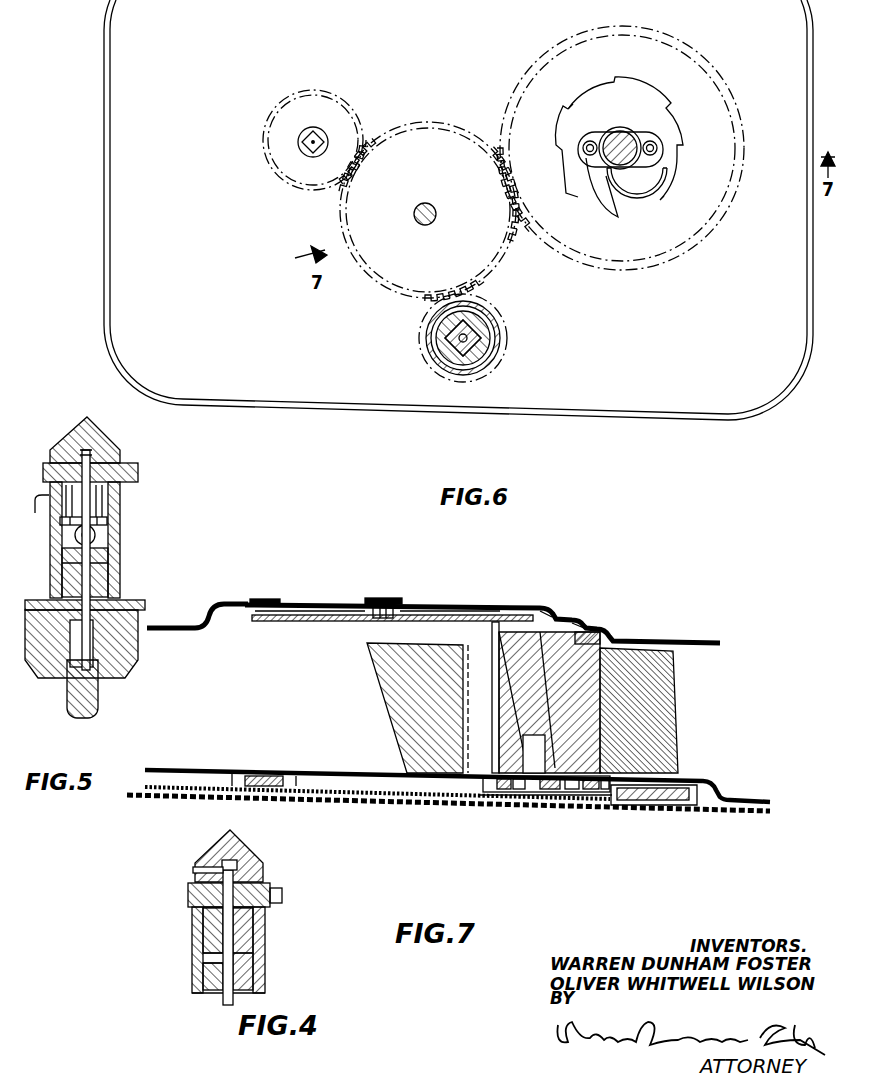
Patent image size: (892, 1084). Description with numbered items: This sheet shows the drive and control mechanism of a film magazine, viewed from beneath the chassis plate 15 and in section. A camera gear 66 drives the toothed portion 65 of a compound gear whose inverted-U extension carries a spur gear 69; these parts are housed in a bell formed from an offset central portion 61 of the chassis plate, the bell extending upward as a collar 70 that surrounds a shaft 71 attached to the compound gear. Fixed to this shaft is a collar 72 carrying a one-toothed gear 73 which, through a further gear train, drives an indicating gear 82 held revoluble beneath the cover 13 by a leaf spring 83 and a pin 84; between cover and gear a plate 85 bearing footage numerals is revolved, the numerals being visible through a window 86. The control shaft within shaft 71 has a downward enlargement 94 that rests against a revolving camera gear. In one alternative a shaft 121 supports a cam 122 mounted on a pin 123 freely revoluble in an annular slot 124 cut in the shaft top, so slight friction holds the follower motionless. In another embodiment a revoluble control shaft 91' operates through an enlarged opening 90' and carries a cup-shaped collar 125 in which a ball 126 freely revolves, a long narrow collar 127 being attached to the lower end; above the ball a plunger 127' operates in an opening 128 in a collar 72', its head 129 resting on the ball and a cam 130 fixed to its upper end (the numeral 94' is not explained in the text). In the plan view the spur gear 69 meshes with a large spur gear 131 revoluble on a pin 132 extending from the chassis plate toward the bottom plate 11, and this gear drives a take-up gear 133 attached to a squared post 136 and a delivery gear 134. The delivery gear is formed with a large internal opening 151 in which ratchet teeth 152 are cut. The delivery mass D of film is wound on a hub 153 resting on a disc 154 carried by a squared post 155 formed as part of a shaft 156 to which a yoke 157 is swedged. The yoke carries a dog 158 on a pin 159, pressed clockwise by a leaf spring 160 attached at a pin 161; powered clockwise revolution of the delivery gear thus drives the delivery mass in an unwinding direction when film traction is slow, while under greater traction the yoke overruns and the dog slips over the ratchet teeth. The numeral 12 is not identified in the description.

In FIG. 6, the bottom plate 11 is at (458, 207).
In FIG. 7, the bottom plate 11 is at (762, 813).
In FIG. 6, the rim flange 12 is at (750, 420).
In FIG. 7, the cover 13 is at (660, 637).
In FIG. 7, the chassis plate 15 is at (760, 800).
In FIG. 7, the central portion 61 is at (340, 770).
In FIG. 6, the toothed portion 65 is at (463, 366).
In FIG. 6, the camera gear 66 is at (447, 371).
In FIG. 6, the spur gear 69 is at (493, 375).
In FIG. 4, the collar 70 is at (263, 987).
In FIG. 4, the shaft 71 is at (265, 927).
In FIG. 4, the collar 72 is at (192, 908).
In FIG. 5, the collar 72' is at (36, 513).
In FIG. 4, the one-toothed gear 73 is at (283, 897).
In FIG. 7, the indicating gear 82 is at (282, 620).
In FIG. 7, the leaf spring 83 is at (412, 603).
In FIG. 7, the pin 84 is at (386, 598).
In FIG. 7, the plate 85 is at (322, 612).
In FIG. 7, the window 86 is at (270, 599).
In FIG. 5, the enlarged opening 90' is at (60, 670).
In FIG. 5, the control shaft 91' is at (112, 576).
In FIG. 6, the downward enlargement 94 is at (510, 338).
In FIG. 5, the gear body 94' is at (97, 656).
In FIG. 4, the shaft 121 is at (265, 948).
In FIG. 4, the cam 122 is at (205, 852).
In FIG. 4, the pin 123 is at (193, 870).
In FIG. 4, the annular slot 124 is at (238, 870).
In FIG. 5, the cup-shaped collar 125 is at (110, 548).
In FIG. 5, the ball 126 is at (110, 533).
In FIG. 5, the collar 127 is at (97, 708).
In FIG. 5, the plunger 127' is at (124, 459).
In FIG. 5, the opening 128 is at (92, 500).
In FIG. 5, the head 129 is at (107, 520).
In FIG. 5, the cam 130 is at (107, 438).
In FIG. 6, the spur gear 131 is at (429, 211).
In FIG. 7, the spur gear 131 is at (308, 800).
In FIG. 6, the pin 132 is at (437, 215).
In FIG. 7, the pin 132 is at (272, 776).
In FIG. 6, the take-up gear 133 is at (314, 141).
In FIG. 6, the delivery gear 134 is at (620, 148).
In FIG. 7, the delivery gear 134 is at (702, 812).
In FIG. 6, the squared post 136 is at (298, 143).
In FIG. 6, the internal opening 151 is at (619, 138).
In FIG. 7, the internal opening 151 is at (599, 805).
In FIG. 6, the ratchet teeth 152 is at (576, 104).
In FIG. 7, the ratchet teeth 152 is at (620, 808).
In FIG. 7, the hub 153 is at (558, 607).
In FIG. 7, the disc 154 is at (535, 610).
In FIG. 7, the squared post 155 is at (494, 628).
In FIG. 6, the shaft 156 is at (612, 140).
In FIG. 7, the shaft 156 is at (506, 792).
In FIG. 6, the yoke 157 is at (642, 134).
In FIG. 7, the yoke 157 is at (490, 792).
In FIG. 6, the dog 158 is at (600, 192).
In FIG. 6, the pin 159 is at (584, 152).
In FIG. 7, the pin 159 is at (489, 800).
In FIG. 6, the leaf spring 160 is at (668, 186).
In FIG. 7, the leaf spring 160 is at (590, 805).
In FIG. 6, the pin 161 is at (659, 149).
In FIG. 7, the pin 161 is at (571, 805).
In FIG. 7, the delivery mass D is at (574, 630).